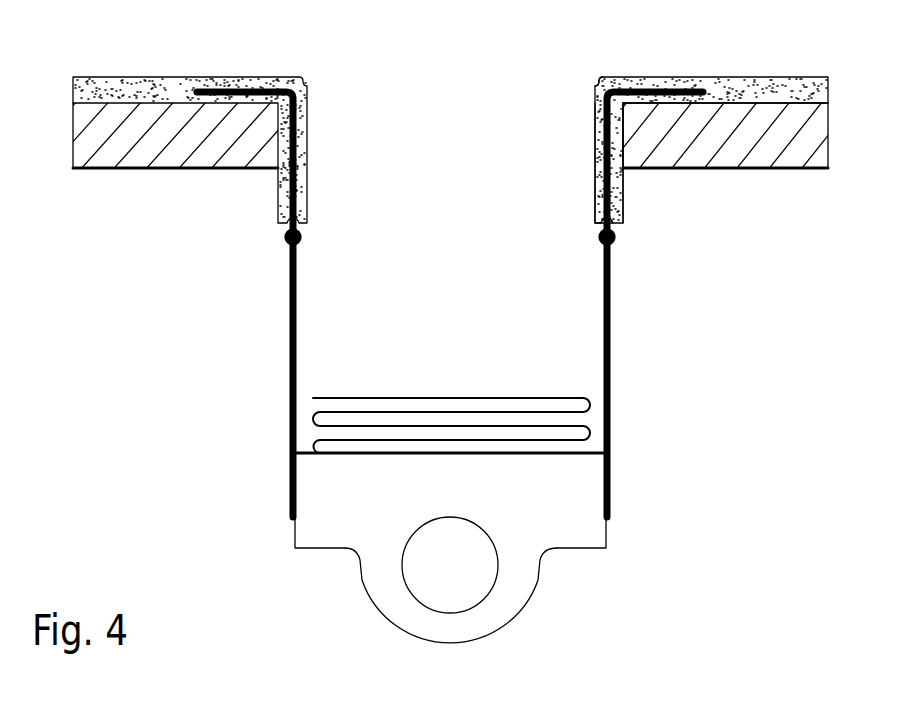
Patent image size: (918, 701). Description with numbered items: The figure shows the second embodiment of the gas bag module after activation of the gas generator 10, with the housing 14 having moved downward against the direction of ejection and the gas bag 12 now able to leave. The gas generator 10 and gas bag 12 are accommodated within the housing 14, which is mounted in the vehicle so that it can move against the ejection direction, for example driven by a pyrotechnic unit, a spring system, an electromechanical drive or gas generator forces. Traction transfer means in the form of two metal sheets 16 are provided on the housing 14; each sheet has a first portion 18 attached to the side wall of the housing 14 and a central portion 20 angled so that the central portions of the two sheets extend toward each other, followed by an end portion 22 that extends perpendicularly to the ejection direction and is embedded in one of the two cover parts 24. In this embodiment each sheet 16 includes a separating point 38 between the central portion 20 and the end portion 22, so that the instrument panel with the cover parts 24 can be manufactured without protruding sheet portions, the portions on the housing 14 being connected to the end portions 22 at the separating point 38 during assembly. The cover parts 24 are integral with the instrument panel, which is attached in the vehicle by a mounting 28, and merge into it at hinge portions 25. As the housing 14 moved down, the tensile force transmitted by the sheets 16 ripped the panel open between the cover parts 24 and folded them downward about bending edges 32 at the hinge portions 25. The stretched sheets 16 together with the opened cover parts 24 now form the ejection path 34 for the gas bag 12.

The gas generator 10 is at (470, 590).
The gas bag 12 is at (610, 420).
The housing 14 is at (323, 530).
The metal sheets 16 is at (292, 307).
The first portion 18 is at (610, 500).
The central portion 20 is at (610, 333).
The end portion 22 is at (617, 212).
The cover parts 24 is at (298, 135).
The hinge portions 25 is at (595, 85).
The mounting 28 is at (776, 140).
The bending edges 32 is at (628, 110).
The ejection path 34 is at (464, 325).
The separating point 38 is at (300, 237).